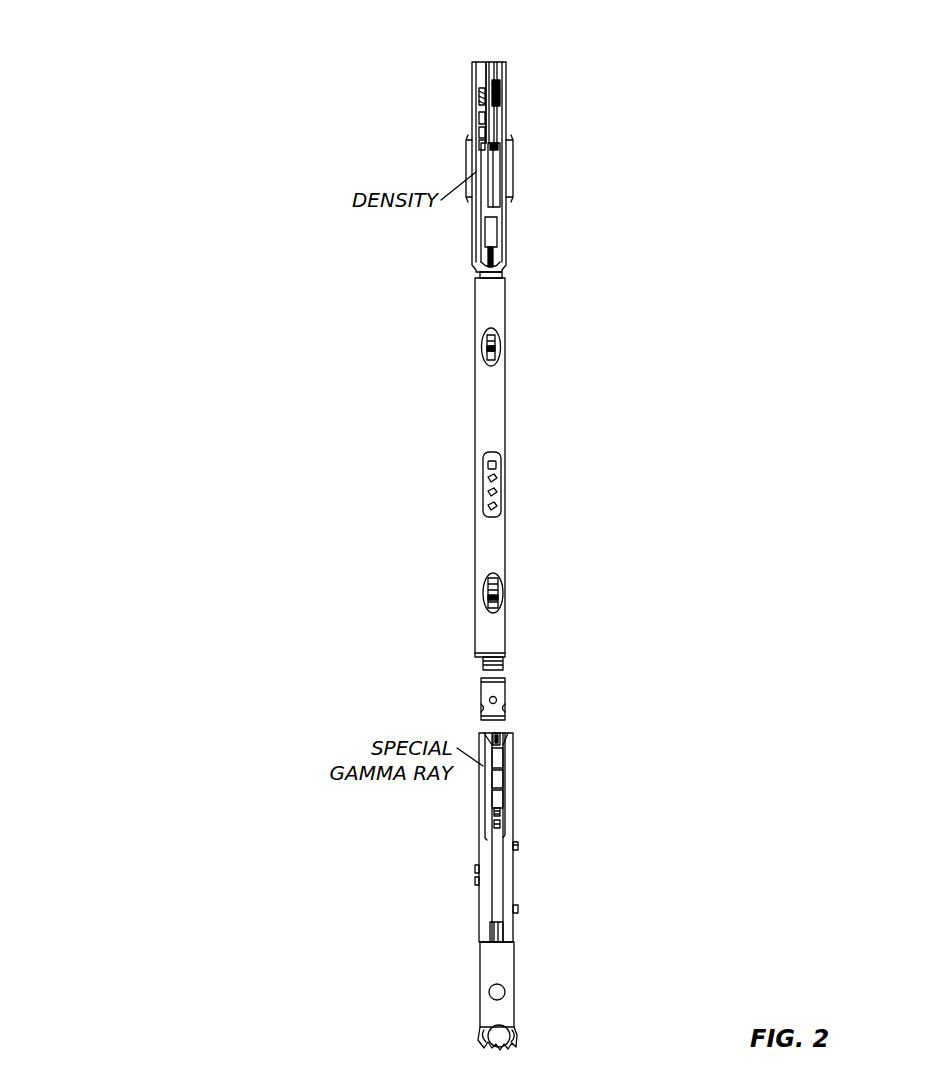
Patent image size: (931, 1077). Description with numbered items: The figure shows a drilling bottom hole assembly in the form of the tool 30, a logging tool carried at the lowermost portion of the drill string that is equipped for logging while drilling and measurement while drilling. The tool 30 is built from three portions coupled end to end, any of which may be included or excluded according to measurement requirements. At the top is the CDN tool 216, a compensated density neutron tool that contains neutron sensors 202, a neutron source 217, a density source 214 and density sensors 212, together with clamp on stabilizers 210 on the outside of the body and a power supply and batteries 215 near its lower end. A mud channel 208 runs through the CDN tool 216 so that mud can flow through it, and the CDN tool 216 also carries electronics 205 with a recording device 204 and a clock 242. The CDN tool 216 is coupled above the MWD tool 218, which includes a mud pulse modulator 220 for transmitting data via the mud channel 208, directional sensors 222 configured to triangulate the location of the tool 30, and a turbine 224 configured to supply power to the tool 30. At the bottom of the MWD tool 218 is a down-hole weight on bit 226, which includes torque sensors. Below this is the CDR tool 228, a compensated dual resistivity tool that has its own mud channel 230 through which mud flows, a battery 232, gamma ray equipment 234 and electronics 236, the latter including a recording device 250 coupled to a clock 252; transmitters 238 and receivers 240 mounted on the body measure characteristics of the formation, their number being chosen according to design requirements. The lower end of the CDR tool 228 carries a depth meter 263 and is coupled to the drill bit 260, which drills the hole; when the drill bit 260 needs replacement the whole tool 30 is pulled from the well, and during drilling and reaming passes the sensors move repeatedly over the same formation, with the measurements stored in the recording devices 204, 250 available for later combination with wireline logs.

The tool 30 is at (120, 93).
The neutron sensors 202 is at (473, 88).
The recording device 204 is at (479, 128).
The electronics 205 is at (479, 118).
The mud channel 208 is at (490, 62).
The clamp on stabilizers 210 is at (515, 162).
The density sensors 212 is at (493, 193).
The density source 214 is at (495, 142).
The power supply and batteries 215 is at (490, 240).
The CDN tool 216 is at (173, 268).
The neutron source 217 is at (494, 97).
The MWD tool 218 is at (168, 718).
The modulator 220 is at (500, 345).
The directional sensors 222 is at (503, 490).
The turbine 224 is at (503, 592).
The down-hole weight on bit 226 is at (510, 697).
The CDR tool 228 is at (168, 945).
The mud channel 230 is at (502, 732).
The battery 232 is at (497, 760).
The gamma ray equipment 234 is at (497, 778).
The electronics 236 is at (500, 803).
The transmitters 238 is at (518, 905).
The receivers 240 is at (477, 884).
The clock 242 is at (480, 143).
The recording device 250 is at (501, 811).
The clock 252 is at (501, 825).
The drill bit 260 is at (517, 1032).
The depth meter 263 is at (505, 990).